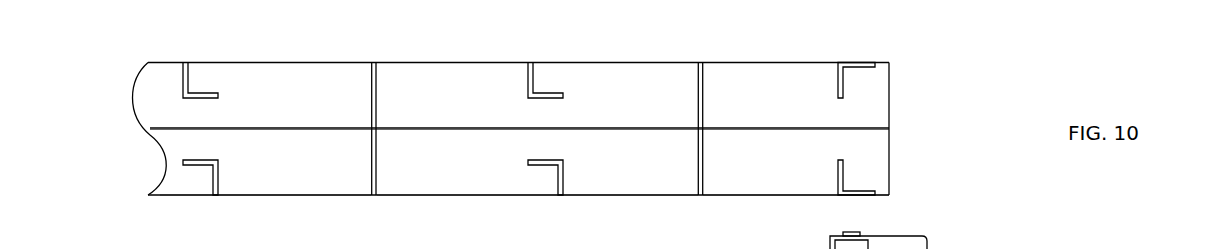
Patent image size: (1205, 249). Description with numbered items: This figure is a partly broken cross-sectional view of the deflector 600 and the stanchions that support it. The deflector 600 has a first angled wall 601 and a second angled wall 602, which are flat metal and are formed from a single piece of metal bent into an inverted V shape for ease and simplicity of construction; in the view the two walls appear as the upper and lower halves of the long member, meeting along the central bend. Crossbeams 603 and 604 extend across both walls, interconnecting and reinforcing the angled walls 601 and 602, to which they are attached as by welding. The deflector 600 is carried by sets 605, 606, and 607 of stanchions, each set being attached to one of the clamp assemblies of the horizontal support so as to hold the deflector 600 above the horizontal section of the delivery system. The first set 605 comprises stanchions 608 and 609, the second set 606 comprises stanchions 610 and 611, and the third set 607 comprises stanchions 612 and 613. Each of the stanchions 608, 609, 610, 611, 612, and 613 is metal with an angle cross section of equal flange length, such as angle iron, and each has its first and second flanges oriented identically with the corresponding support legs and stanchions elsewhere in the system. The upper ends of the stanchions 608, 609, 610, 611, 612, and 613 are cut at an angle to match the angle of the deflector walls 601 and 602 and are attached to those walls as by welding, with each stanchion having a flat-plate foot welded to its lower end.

The deflector 600 is at (947, 110).
The first angled wall 601 is at (889, 92).
The second angled wall 602 is at (889, 165).
The crossbeam 603 is at (376, 97).
The crossbeam 604 is at (703, 98).
The set of stanchions 605 is at (265, 203).
The set of stanchions 606 is at (610, 203).
The set of stanchions 607 is at (884, 203).
The stanchion 608 is at (188, 73).
The stanchion 609 is at (213, 177).
The stanchion 610 is at (533, 77).
The stanchion 611 is at (558, 173).
The stanchion 612 is at (857, 62).
The stanchion 613 is at (848, 195).